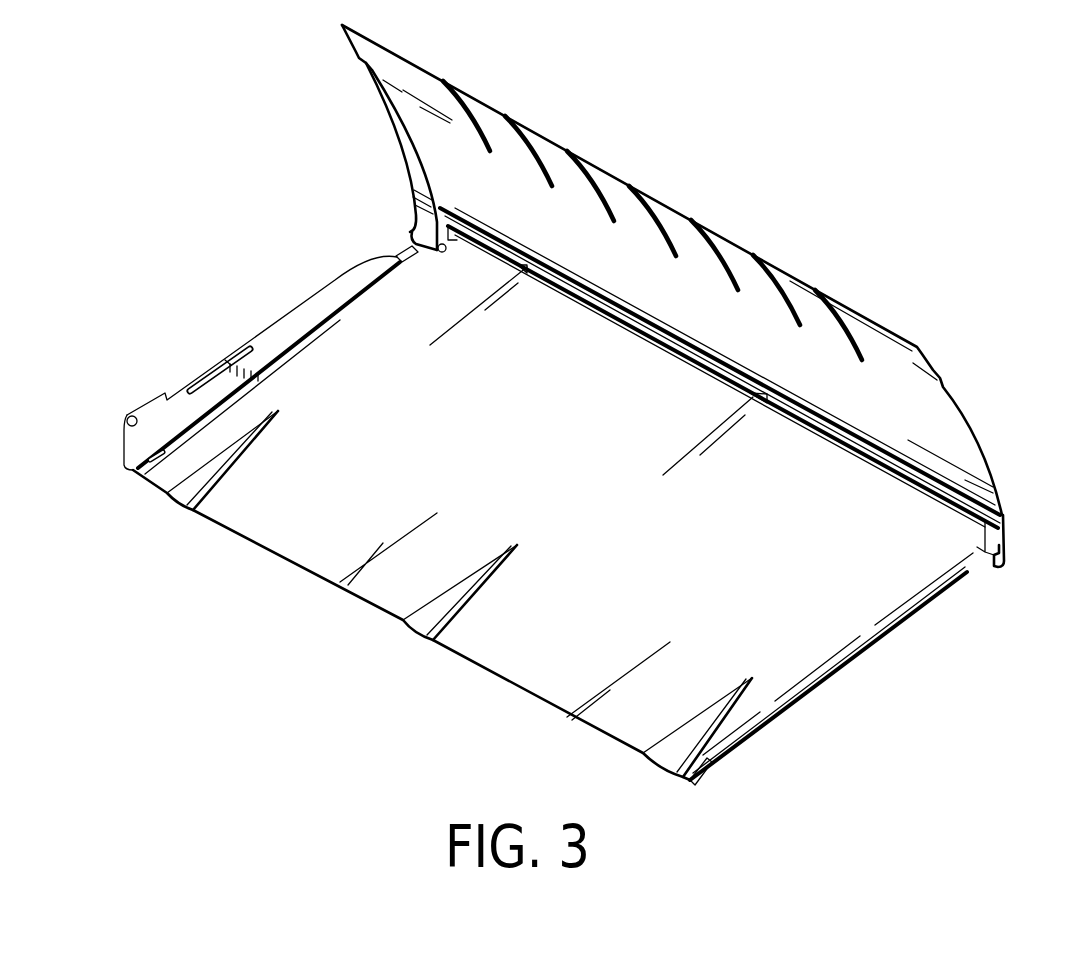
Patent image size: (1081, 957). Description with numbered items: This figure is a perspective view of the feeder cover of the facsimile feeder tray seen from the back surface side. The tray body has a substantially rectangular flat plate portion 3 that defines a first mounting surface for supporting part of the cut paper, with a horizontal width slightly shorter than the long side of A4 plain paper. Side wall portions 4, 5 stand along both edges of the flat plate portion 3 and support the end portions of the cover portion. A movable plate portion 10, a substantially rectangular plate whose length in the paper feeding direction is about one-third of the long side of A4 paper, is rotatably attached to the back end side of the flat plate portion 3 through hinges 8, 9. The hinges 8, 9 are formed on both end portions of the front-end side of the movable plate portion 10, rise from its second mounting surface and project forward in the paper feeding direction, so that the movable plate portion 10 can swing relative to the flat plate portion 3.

The flat plate portion 3 is at (507, 643).
The side wall portion 4 is at (857, 660).
The side wall portion 5 is at (290, 326).
The hinge 8 is at (1004, 540).
The hinge 9 is at (421, 218).
The movable plate portion 10 is at (725, 252).